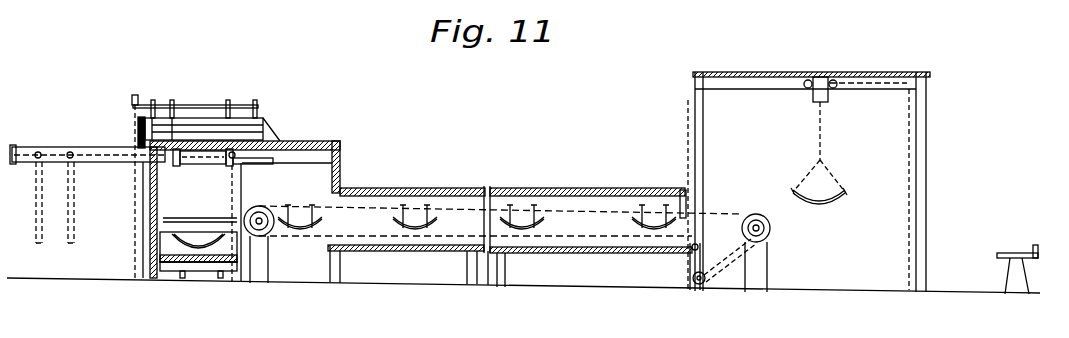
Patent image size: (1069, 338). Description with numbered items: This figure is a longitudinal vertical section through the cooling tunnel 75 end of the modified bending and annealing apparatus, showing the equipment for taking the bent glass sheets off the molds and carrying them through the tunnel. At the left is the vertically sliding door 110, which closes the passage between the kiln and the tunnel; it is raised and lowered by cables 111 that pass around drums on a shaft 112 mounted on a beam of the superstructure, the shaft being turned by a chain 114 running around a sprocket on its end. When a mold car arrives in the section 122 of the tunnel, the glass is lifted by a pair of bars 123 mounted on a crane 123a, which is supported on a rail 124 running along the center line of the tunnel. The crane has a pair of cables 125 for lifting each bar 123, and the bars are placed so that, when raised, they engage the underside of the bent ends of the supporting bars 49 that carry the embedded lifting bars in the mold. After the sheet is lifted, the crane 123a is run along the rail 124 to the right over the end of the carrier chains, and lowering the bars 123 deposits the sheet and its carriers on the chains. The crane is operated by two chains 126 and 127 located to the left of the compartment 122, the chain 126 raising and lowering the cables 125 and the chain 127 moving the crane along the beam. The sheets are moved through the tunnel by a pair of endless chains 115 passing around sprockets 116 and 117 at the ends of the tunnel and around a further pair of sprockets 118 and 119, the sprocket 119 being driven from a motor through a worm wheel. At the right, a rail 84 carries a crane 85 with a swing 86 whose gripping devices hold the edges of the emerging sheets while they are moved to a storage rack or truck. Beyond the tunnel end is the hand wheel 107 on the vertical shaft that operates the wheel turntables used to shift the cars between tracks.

The supporting bar 49 is at (640, 227).
The cooling tunnel 75 is at (580, 190).
The rail 84 is at (746, 82).
The crane 85 is at (829, 77).
The swing 86 is at (809, 177).
The hand wheel 107 is at (1007, 253).
The vertically sliding door 110 is at (245, 142).
The cables 111 is at (237, 120).
The shaft 112 is at (173, 110).
The chain 114 is at (132, 243).
The endless chains 115 is at (460, 197).
The sprocket 116 is at (259, 237).
The sprocket 117 is at (771, 232).
The sprocket 118 is at (690, 262).
The sprocket 119 is at (703, 284).
The section of the cooling tunnel 122 is at (300, 190).
The bars 123 is at (197, 214).
The crane 123a is at (200, 160).
The rail 124 is at (288, 163).
The cables 125 is at (165, 182).
The chain 126 is at (71, 243).
The chain 127 is at (39, 243).